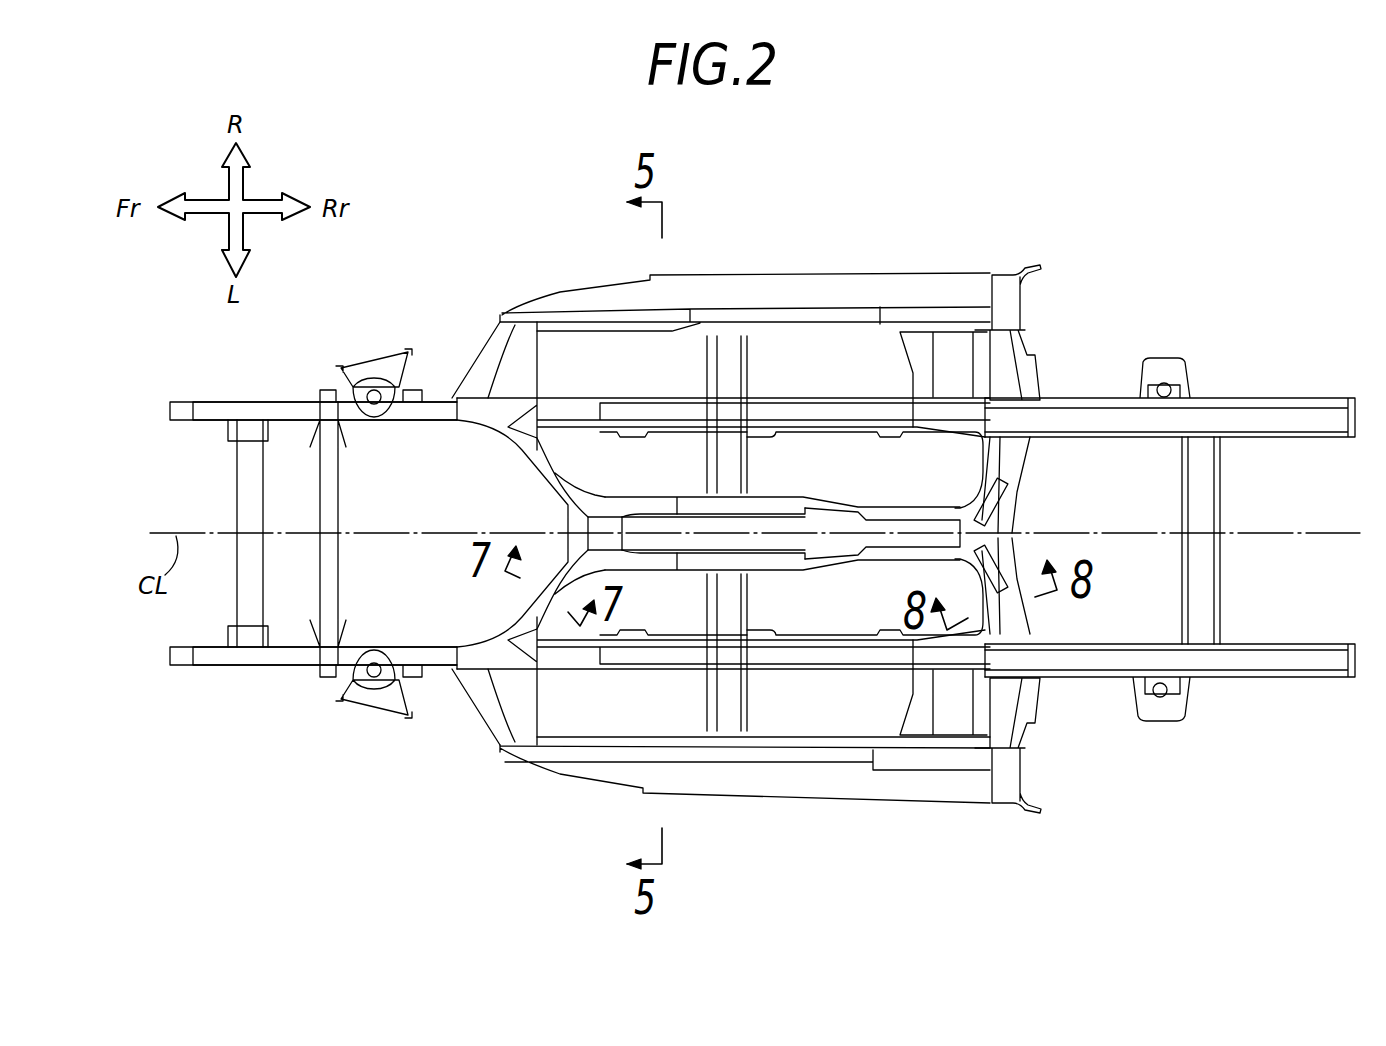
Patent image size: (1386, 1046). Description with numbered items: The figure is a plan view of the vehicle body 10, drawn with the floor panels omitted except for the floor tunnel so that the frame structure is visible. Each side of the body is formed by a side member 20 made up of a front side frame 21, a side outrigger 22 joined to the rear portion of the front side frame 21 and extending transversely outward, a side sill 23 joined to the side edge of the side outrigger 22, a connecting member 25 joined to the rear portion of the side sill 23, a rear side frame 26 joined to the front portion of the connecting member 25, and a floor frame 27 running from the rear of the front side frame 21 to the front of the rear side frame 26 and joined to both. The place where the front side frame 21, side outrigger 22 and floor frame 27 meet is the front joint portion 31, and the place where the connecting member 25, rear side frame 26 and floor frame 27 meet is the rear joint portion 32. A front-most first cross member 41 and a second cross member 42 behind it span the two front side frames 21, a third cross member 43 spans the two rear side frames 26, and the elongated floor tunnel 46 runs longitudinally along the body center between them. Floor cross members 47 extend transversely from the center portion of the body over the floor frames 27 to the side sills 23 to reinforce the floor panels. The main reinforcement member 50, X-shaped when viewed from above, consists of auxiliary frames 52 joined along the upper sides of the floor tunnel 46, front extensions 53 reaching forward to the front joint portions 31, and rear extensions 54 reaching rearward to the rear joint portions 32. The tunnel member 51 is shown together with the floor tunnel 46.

The vehicle body 10 is at (1288, 308).
The left side member 20 is at (205, 396).
The front side frame 21 is at (277, 402).
The side outrigger 22 is at (500, 345).
The side sill 23 is at (803, 312).
The connecting member 25 is at (1002, 360).
The rear side frame 26 is at (1238, 415).
The floor frame 27 is at (852, 410).
The front joint portion 31 is at (551, 387).
The rear joint portion 32 is at (1044, 393).
The first cross member 41 is at (240, 495).
The second cross member 42 is at (322, 520).
The third cross member 43 is at (1215, 511).
The floor tunnel 46 is at (797, 550).
The floor cross member 47 is at (745, 381).
The main reinforcement member 50 is at (853, 495).
The tunnel member 51 is at (713, 533).
The auxiliary frame 52 is at (758, 548).
The front extension 53 is at (530, 476).
The rear extension 54 is at (1023, 466).